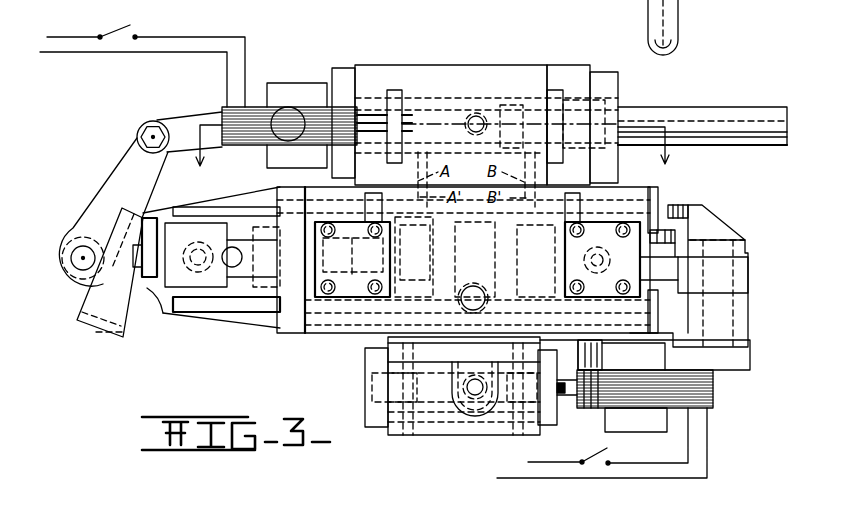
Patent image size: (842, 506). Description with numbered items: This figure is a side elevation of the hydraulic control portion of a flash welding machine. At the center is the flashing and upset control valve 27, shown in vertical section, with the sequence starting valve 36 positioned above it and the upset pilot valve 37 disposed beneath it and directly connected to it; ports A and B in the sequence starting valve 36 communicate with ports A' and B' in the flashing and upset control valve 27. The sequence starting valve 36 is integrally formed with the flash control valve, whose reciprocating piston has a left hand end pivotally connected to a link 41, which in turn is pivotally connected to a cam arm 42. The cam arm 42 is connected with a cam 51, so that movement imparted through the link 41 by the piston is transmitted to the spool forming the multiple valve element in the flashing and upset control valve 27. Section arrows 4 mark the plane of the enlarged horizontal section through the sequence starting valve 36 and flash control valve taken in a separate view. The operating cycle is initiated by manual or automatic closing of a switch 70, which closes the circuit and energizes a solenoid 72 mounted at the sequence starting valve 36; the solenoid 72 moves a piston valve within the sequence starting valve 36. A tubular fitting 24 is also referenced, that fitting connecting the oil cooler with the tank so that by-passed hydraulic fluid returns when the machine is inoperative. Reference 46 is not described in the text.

The section line 4 is at (432, 159).
The tubular fitting 24 is at (458, 302).
The flashing and upset control valve 27 is at (482, 261).
The sequence starting valve 36 is at (485, 88).
The upset pilot valve 37 is at (437, 428).
The link 41 is at (186, 130).
The cam arm 42 is at (125, 173).
The control shaft 46 is at (410, 112).
The cam 51 is at (137, 312).
The switch 70 is at (128, 25).
The solenoid 72 is at (307, 163).